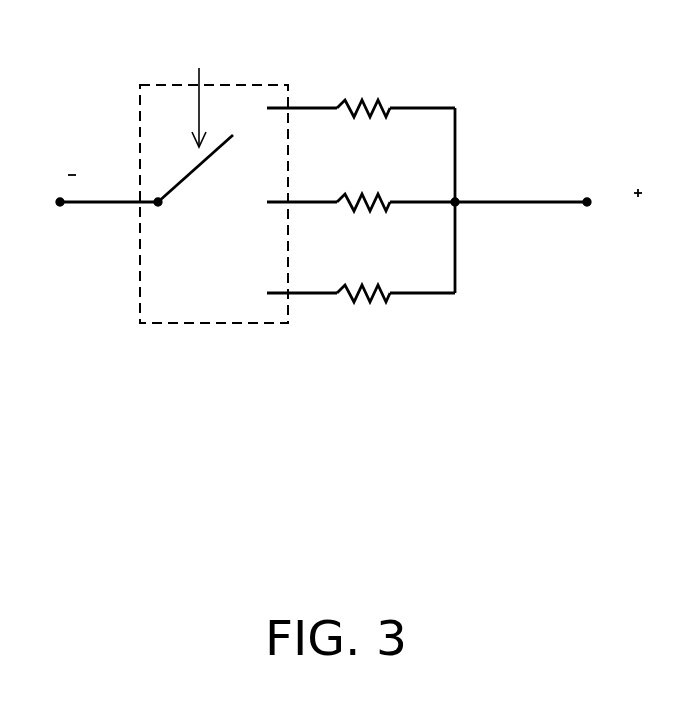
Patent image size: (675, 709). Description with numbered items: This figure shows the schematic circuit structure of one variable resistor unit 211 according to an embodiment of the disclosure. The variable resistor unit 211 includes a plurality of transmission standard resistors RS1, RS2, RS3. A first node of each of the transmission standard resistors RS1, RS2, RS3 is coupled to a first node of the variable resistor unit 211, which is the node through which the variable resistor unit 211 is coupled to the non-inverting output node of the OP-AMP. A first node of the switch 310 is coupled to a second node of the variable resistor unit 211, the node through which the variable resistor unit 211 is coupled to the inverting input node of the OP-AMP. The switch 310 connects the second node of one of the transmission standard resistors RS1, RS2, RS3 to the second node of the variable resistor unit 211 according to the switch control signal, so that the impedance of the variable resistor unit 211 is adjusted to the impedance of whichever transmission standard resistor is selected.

The switch 310 is at (213, 323).
The variable resistor unit 211 is at (337, 229).
The transmission standard resistor RS1 is at (361, 89).
The transmission standard resistor RS2 is at (361, 183).
The transmission standard resistor RS3 is at (361, 274).